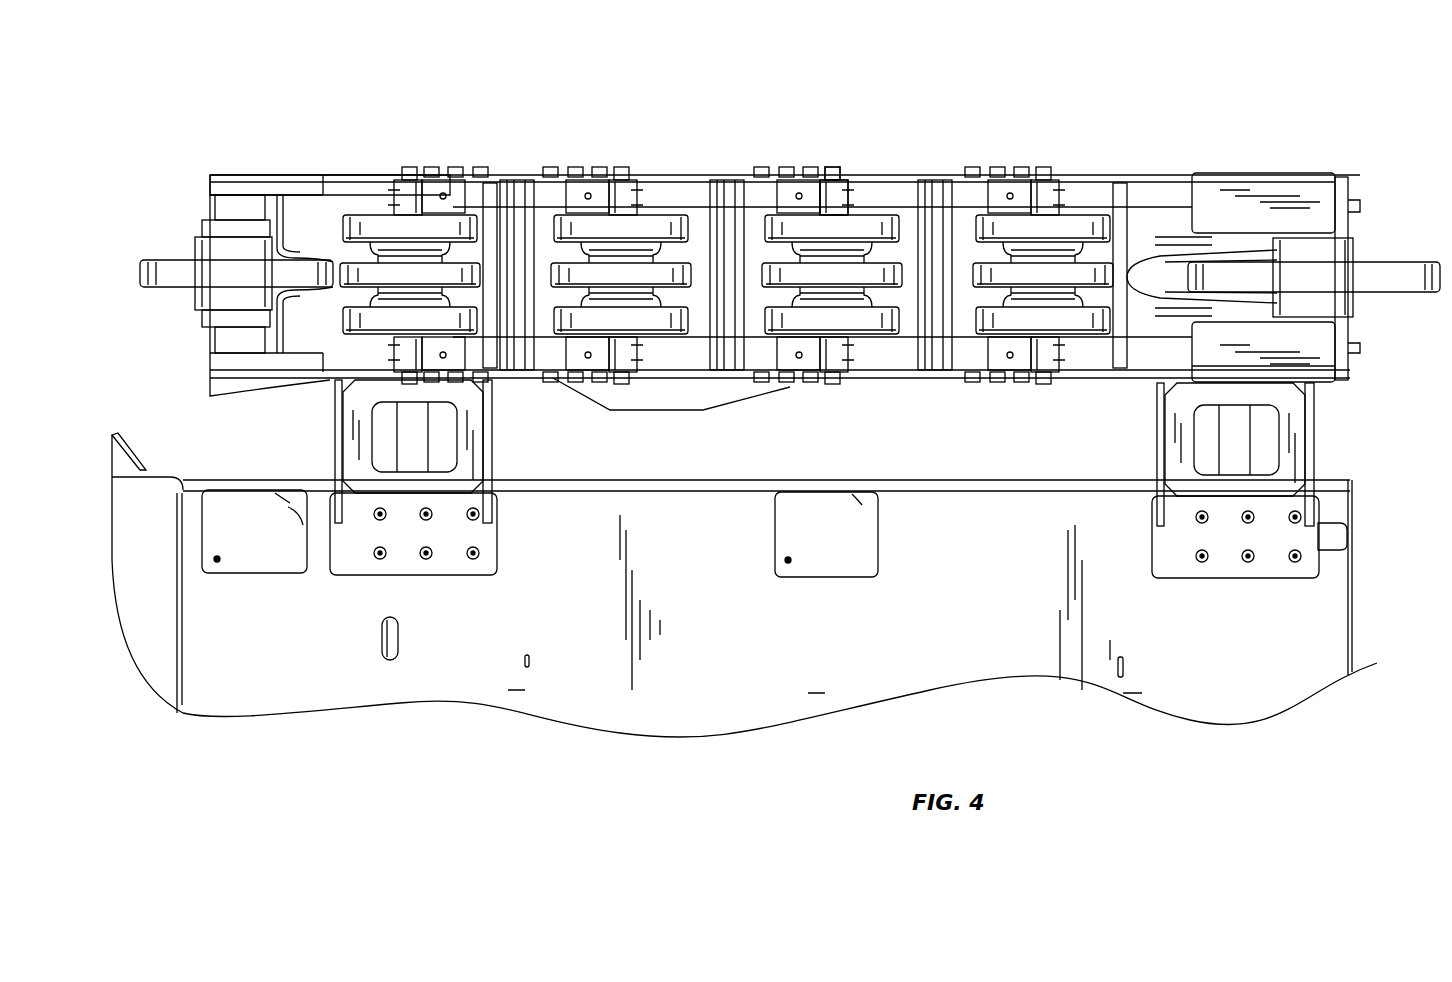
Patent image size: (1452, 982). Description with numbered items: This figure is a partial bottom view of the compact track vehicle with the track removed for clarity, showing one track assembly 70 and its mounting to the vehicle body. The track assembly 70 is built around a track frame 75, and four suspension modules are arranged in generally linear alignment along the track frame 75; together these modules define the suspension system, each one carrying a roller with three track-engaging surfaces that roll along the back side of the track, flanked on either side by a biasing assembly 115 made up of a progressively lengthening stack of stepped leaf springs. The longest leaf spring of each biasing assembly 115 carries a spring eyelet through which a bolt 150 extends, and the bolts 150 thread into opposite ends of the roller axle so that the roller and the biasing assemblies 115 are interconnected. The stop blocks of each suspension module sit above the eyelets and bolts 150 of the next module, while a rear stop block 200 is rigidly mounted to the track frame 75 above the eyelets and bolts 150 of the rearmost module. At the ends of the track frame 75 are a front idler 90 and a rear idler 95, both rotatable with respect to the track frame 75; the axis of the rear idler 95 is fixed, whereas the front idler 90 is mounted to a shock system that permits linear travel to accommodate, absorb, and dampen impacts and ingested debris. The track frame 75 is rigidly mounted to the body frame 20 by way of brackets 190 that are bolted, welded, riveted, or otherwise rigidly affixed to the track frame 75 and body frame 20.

The body frame 20 is at (845, 632).
The track assembly 70 is at (238, 148).
The track frame 75 is at (905, 185).
The front idler 90 is at (1370, 290).
The rear idler 95 is at (168, 265).
The biasing assembly 115 is at (460, 192).
The bolt 150 is at (835, 183).
The bracket 190 is at (480, 452).
The rear stop block 200 is at (340, 186).